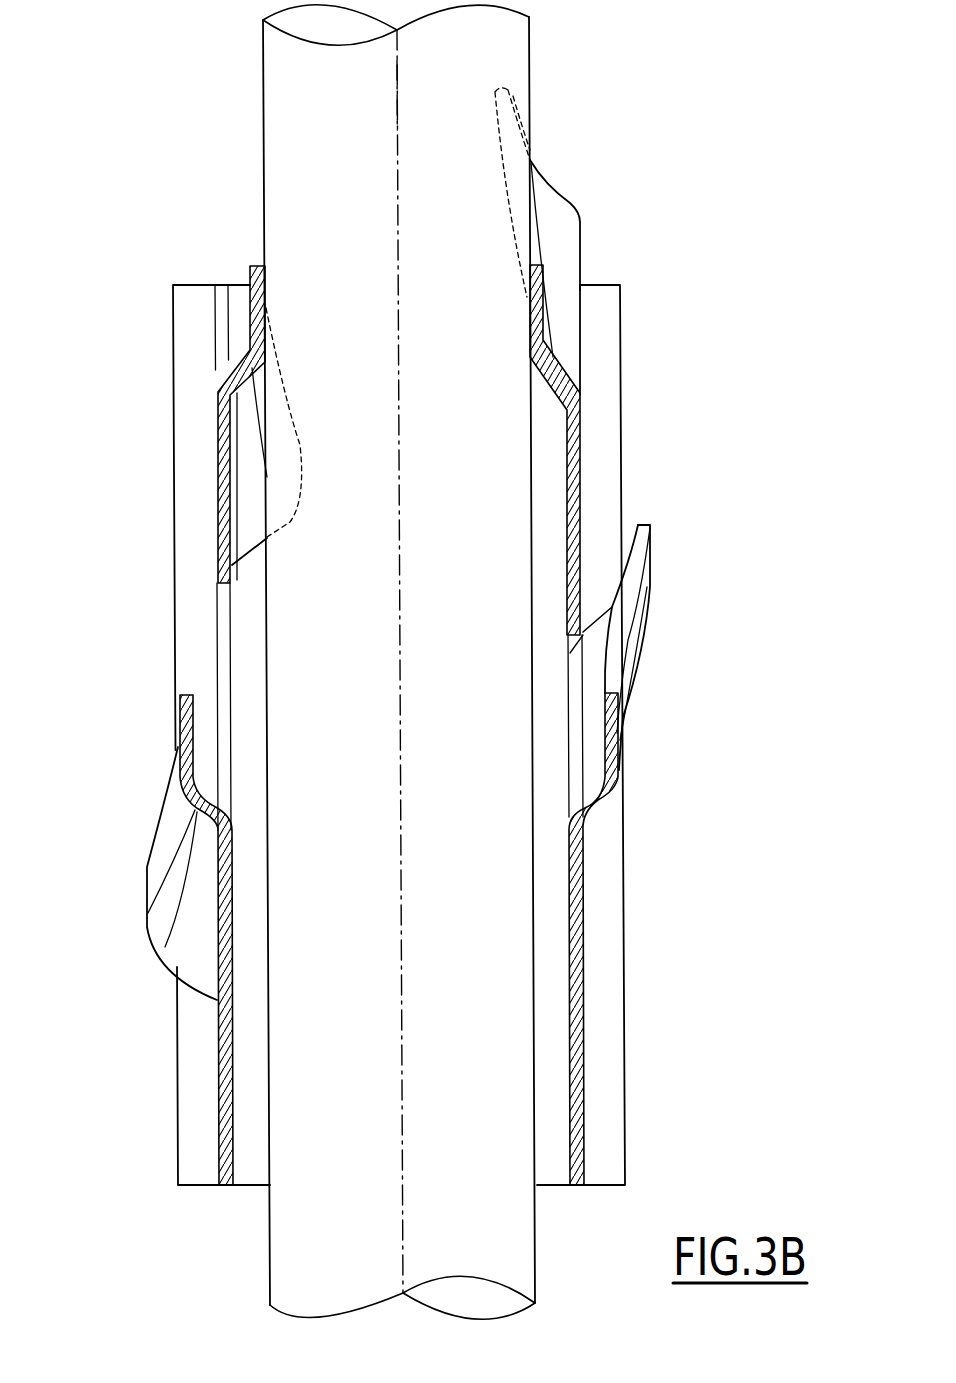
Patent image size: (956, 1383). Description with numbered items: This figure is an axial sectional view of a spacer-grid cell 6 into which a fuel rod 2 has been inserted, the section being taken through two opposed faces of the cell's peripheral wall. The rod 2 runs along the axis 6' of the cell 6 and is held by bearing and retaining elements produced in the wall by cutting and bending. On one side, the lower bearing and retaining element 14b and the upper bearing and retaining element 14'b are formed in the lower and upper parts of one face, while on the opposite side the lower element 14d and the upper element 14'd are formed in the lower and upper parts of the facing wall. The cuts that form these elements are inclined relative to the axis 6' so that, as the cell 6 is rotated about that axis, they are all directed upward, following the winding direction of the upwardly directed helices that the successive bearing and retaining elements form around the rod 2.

The rod 2 is at (399, 662).
The cell 6 is at (419, 700).
The axis of the cell 6' is at (361, 95).
The bearing and retaining element 14'b is at (513, 370).
The bearing and retaining element 14'd is at (201, 424).
The bearing and retaining element 14b is at (628, 650).
The bearing and retaining element 14d is at (167, 902).